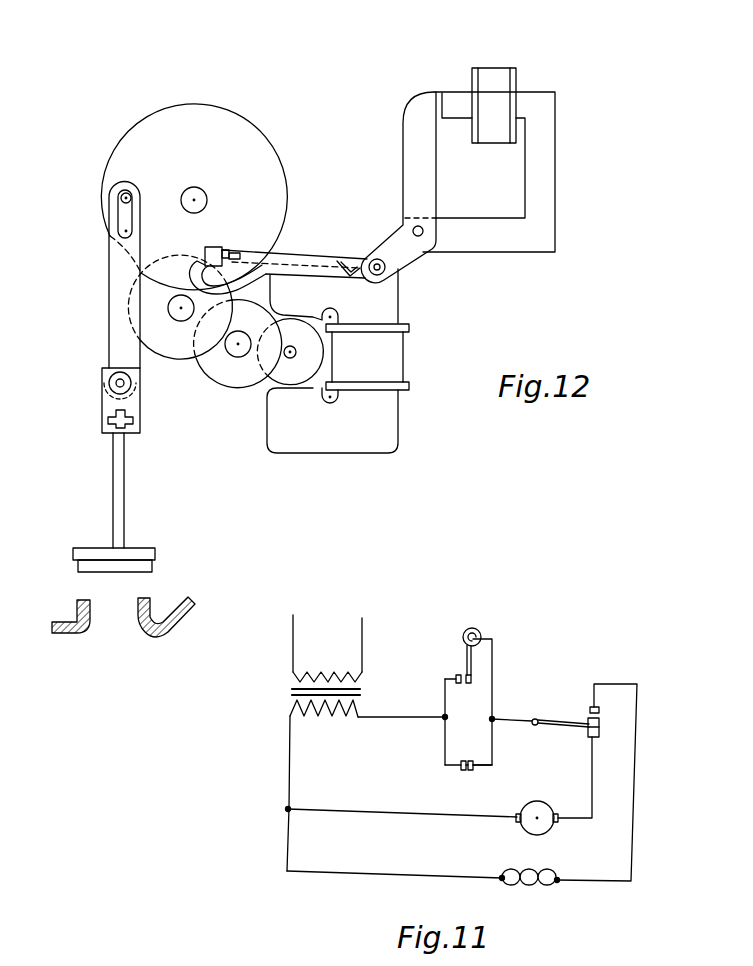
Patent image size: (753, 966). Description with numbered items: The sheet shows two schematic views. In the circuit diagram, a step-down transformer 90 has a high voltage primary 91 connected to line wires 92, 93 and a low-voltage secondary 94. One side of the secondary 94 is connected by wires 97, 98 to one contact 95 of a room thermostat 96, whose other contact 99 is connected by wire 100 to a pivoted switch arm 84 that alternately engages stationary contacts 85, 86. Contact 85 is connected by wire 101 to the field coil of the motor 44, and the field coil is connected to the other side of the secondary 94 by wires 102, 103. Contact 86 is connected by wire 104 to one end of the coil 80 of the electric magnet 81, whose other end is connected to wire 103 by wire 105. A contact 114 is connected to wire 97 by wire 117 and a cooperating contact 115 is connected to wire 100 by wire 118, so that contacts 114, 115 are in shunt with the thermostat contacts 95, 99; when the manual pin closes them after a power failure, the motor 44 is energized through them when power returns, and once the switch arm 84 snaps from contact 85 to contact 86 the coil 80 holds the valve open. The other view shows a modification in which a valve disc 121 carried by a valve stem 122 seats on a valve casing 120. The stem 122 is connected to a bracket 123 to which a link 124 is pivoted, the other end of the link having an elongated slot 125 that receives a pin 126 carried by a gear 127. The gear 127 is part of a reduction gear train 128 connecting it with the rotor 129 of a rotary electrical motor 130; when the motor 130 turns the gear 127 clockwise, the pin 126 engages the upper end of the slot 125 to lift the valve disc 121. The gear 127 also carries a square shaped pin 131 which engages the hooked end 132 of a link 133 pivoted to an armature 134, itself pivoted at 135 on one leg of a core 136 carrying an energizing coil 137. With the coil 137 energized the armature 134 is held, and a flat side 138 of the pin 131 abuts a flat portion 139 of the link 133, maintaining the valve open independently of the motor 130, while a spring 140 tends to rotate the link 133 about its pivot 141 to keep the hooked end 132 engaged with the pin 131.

In FIG. 12, the gear 127 is at (140, 133).
In FIG. 12, the pin 126 is at (122, 196).
In FIG. 12, the elongated slot 125 is at (125, 214).
In FIG. 12, the link 124 is at (123, 265).
In FIG. 12, the bracket 123 is at (102, 402).
In FIG. 12, the valve stem 122 is at (122, 515).
In FIG. 12, the valve disc 121 is at (152, 568).
In FIG. 12, the valve casing 120 is at (157, 637).
In FIG. 12, the reduction gear train 128 is at (193, 366).
In FIG. 12, the rotor 129 is at (277, 378).
In FIG. 12, the rotary electrical motor 130 is at (400, 433).
In FIG. 12, the square shaped pin 131 is at (213, 247).
In FIG. 12, the hooked end 132 is at (200, 263).
In FIG. 12, the link 133 is at (298, 252).
In FIG. 12, the armature 134 is at (406, 169).
In FIG. 12, the pivot 135 is at (414, 229).
In FIG. 12, the core 136 is at (541, 201).
In FIG. 12, the energizing coil 137 is at (497, 83).
In FIG. 12, the flat side 138 is at (223, 249).
In FIG. 12, the flat portion 139 is at (234, 253).
In FIG. 12, the spring 140 is at (350, 259).
In FIG. 12, the pivot 141 is at (400, 282).
In FIG. 11, the step-down transformer 90 is at (365, 679).
In FIG. 11, the high voltage primary 91 is at (323, 672).
In FIG. 11, the line wire 92 is at (363, 632).
In FIG. 11, the line wire 93 is at (293, 633).
In FIG. 11, the low-voltage secondary 94 is at (342, 713).
In FIG. 11, the contact 95 is at (459, 675).
In FIG. 11, the room thermostat 96 is at (481, 629).
In FIG. 11, the wire 97 is at (395, 718).
In FIG. 11, the wire 98 is at (445, 698).
In FIG. 11, the contact 99 is at (468, 684).
In FIG. 11, the wire 100 is at (493, 697).
In FIG. 11, the wire 101 is at (592, 782).
In FIG. 11, the wire 102 is at (404, 815).
In FIG. 11, the wire 103 is at (290, 782).
In FIG. 11, the wire 104 is at (637, 811).
In FIG. 11, the wire 105 is at (362, 875).
In FIG. 11, the contact 114 is at (463, 771).
In FIG. 11, the cooperating contact 115 is at (472, 771).
In FIG. 11, the wire 117 is at (445, 748).
In FIG. 11, the wire 118 is at (493, 747).
In FIG. 11, the switch arm 84 is at (555, 720).
In FIG. 11, the contact 85 is at (588, 732).
In FIG. 11, the contact 86 is at (592, 707).
In FIG. 11, the motor 44 is at (547, 830).
In FIG. 11, the coil 80 is at (540, 886).
In FIG. 11, the electric magnet 81 is at (510, 891).